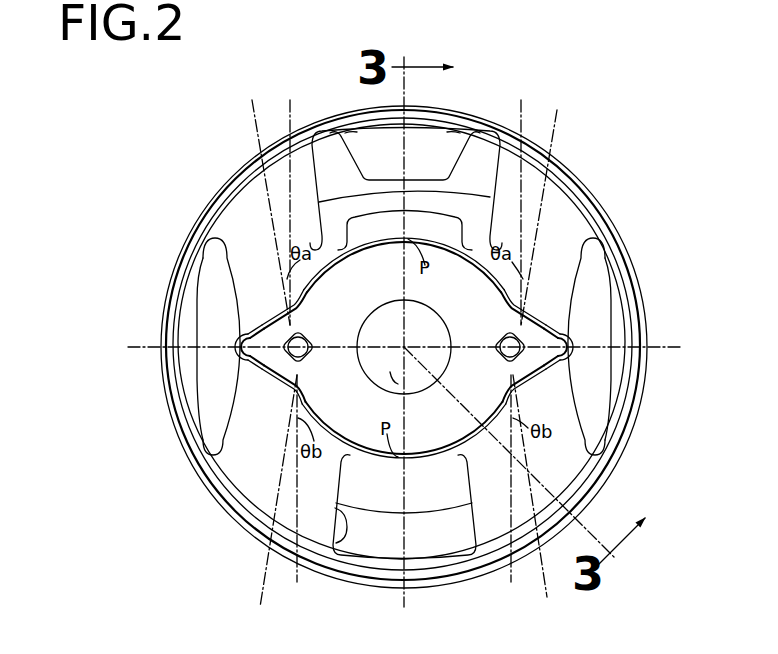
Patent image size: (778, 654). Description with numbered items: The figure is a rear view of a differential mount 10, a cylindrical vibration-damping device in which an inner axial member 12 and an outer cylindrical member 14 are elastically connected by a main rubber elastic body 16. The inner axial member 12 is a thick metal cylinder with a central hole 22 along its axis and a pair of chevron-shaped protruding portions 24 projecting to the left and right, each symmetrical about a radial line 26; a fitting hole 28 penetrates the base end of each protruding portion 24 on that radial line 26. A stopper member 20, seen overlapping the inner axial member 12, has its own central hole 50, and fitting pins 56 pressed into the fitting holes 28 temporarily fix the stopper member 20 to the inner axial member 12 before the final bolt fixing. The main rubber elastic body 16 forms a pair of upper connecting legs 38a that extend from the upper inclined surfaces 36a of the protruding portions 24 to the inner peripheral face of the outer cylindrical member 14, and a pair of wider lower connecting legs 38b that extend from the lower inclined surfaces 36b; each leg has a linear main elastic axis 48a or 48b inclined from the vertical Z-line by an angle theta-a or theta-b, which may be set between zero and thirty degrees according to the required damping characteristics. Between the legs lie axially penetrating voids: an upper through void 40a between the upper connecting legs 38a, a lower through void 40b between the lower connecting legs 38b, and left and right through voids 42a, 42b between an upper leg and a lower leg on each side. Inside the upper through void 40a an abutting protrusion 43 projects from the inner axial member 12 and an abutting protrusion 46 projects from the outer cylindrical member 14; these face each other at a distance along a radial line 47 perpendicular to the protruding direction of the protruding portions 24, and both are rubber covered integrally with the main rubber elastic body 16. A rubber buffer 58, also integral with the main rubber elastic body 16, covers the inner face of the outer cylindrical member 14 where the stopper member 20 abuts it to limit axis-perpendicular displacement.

The differential mount 10 is at (641, 150).
The inner axial member 12 is at (458, 245).
The outer cylindrical member 14 is at (201, 204).
The main rubber elastic body 16 is at (207, 477).
The stopper member 20 is at (437, 518).
The central hole 22 is at (393, 374).
The protruding portion 24 is at (236, 340).
The radial line 26 is at (658, 320).
The fitting hole 28 is at (280, 358).
The inclined surface 36a is at (273, 312).
The inclined surface 36b is at (265, 386).
The upper connecting leg 38a is at (247, 253).
The lower connecting leg 38b is at (262, 447).
The upper through void 40a is at (327, 157).
The lower through void 40b is at (343, 530).
The left through void 42a is at (195, 275).
The right through void 42b is at (612, 410).
The abutting protrusion 43 is at (437, 226).
The abutting protrusion 46 is at (430, 156).
The radial line 47 is at (403, 92).
The main elastic axis 48a is at (258, 142).
The main elastic axis 48b is at (264, 568).
The central hole 50 is at (375, 497).
The fitting pin 56 is at (301, 354).
The rubber buffer 58 is at (190, 383).